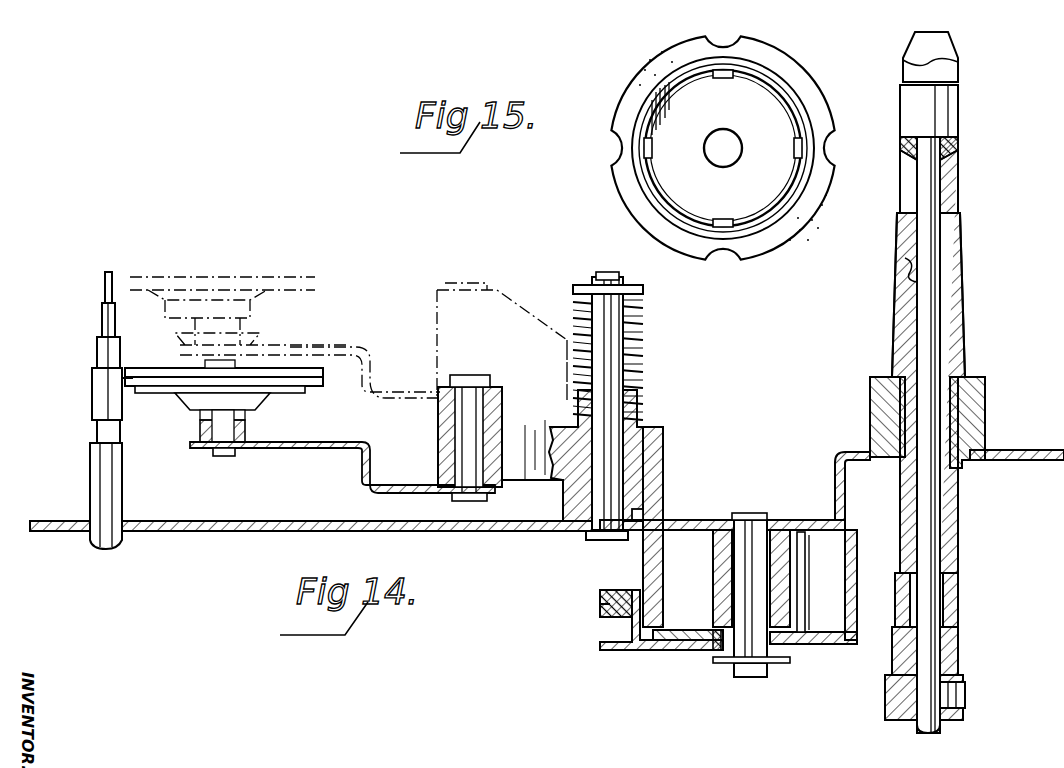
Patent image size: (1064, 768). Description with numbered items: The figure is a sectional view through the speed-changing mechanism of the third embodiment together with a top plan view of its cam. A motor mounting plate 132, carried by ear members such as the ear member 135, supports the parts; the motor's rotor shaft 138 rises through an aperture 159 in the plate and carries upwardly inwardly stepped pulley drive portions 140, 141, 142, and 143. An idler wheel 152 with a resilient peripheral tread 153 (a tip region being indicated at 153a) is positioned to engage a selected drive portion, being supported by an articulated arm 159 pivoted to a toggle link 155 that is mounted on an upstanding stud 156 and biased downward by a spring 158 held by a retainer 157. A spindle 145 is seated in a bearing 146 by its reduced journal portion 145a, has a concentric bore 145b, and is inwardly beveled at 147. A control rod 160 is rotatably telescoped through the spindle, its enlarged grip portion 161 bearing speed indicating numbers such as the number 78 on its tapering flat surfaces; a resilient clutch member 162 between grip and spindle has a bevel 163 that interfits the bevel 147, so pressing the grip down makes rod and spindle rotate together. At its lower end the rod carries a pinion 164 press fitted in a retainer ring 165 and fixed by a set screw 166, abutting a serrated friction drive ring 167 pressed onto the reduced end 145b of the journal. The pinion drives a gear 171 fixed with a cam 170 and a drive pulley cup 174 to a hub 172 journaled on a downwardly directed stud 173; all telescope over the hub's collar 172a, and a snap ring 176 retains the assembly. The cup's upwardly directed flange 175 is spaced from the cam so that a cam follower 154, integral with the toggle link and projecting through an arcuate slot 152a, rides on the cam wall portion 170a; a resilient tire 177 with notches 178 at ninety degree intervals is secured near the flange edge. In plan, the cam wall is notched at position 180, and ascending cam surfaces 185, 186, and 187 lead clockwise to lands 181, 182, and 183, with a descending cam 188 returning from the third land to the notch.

In FIG. 14, the motor mounting plate 132 is at (232, 532).
In FIG. 14, the ear member 135 is at (992, 460).
In FIG. 14, the rotor shaft 138 is at (114, 484).
In FIG. 14, the pulley drive portion 140 is at (91, 406).
In FIG. 14, the pulley drive portion 141 is at (96, 352).
In FIG. 14, the pulley drive portion 142 is at (101, 319).
In FIG. 14, the pulley drive portion 143 is at (104, 285).
In FIG. 14, the spindle 145 is at (964, 258).
In FIG. 14, the journal portion 145a is at (878, 416).
In FIG. 14, the concentric bore / reduced portion 145b is at (900, 280).
In FIG. 14, the bearing 146 is at (975, 398).
In FIG. 14, the inward bevel 147 is at (945, 160).
In FIG. 14, the idler wheel 152 is at (290, 368).
In FIG. 14, the arcuate slot 152a is at (666, 487).
In FIG. 14, the resilient peripheral tread 153 is at (300, 395).
In FIG. 14, the lever contact tip 153a is at (126, 398).
In FIG. 14, the cam follower 154 is at (645, 556).
In FIG. 14, the toggle link 155 is at (664, 438).
In FIG. 14, the stud 156 is at (613, 355).
In FIG. 14, the retainer 157 is at (643, 292).
In FIG. 14, the spring 158 is at (648, 318).
In FIG. 14, the articulated arm / aperture 159 is at (296, 450).
In FIG. 14, the control rod 160 is at (938, 322).
In FIG. 14, the grip portion 161 is at (958, 97).
In FIG. 14, the clutch member 162 is at (898, 146).
In FIG. 14, the circumferential bevel 163 is at (898, 162).
In FIG. 14, the pinion 164 is at (958, 638).
In FIG. 14, the retainer ring 165 is at (963, 716).
In FIG. 14, the set screw 166 is at (962, 692).
In FIG. 14, the serrated friction drive ring 167 is at (958, 605).
In FIG. 14, the cam 170 is at (818, 540).
In FIG. 15, the cam 170 is at (772, 82).
In FIG. 14, the cam wall portion 170a is at (857, 578).
In FIG. 14, the gear 171 is at (636, 652).
In FIG. 14, the hub 172 is at (715, 567).
In FIG. 14, the collar 172a is at (710, 655).
In FIG. 14, the stud 173 is at (745, 665).
In FIG. 14, the drive pulley cup 174 is at (665, 652).
In FIG. 14, the flange 175 is at (628, 630).
In FIG. 14, the snap ring 176 is at (795, 662).
In FIG. 14, the resilient tire 177 is at (600, 589).
In FIG. 14, the notches 178 is at (600, 606).
In FIG. 15, the notches 178 is at (730, 262).
In FIG. 15, the notch position 180 is at (652, 148).
In FIG. 15, the land 181 is at (722, 80).
In FIG. 15, the land 182 is at (796, 150).
In FIG. 15, the land 183 is at (736, 200).
In FIG. 15, the ascending cam surface 185 is at (666, 96).
In FIG. 15, the ascending cam surface 186 is at (782, 100).
In FIG. 15, the ascending cam surface 187 is at (773, 212).
In FIG. 15, the descending cam 188 is at (665, 202).
In FIG. 14, the speed indicating number 78 is at (893, 40).